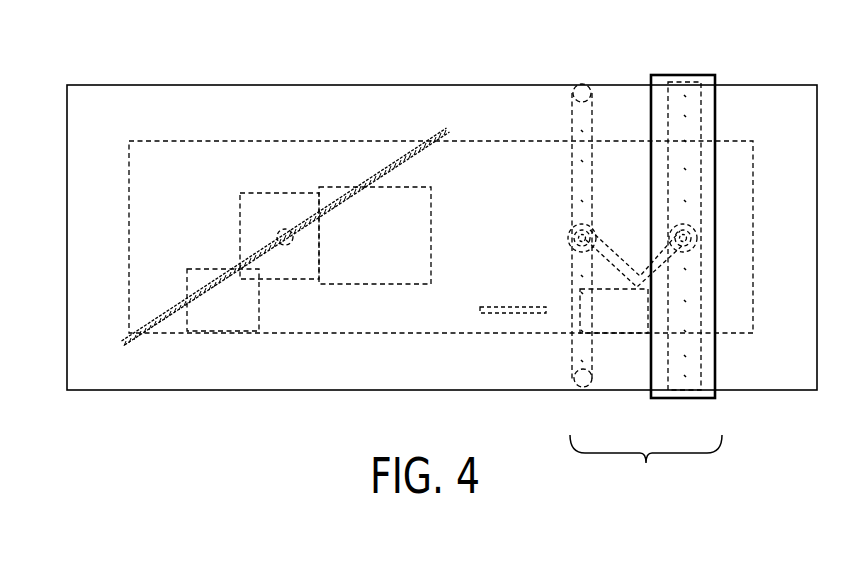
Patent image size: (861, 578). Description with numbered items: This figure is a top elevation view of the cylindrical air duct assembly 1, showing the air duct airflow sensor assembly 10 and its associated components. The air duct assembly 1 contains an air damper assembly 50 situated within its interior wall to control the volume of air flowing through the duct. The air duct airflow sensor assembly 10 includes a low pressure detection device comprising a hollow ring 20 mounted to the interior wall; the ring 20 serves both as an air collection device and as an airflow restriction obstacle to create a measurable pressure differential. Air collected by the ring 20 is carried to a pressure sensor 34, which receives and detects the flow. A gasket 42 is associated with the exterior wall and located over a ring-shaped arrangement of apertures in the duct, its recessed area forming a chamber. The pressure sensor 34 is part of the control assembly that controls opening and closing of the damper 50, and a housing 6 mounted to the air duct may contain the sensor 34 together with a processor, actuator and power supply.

The air duct assembly 1 is at (74, 38).
The housing 6 is at (203, 141).
The air duct airflow sensor assembly 10 is at (646, 465).
The hollow ring 20 is at (573, 122).
The pressure sensor 34 is at (620, 317).
The gasket 42 is at (688, 75).
The air damper assembly 50 is at (383, 170).